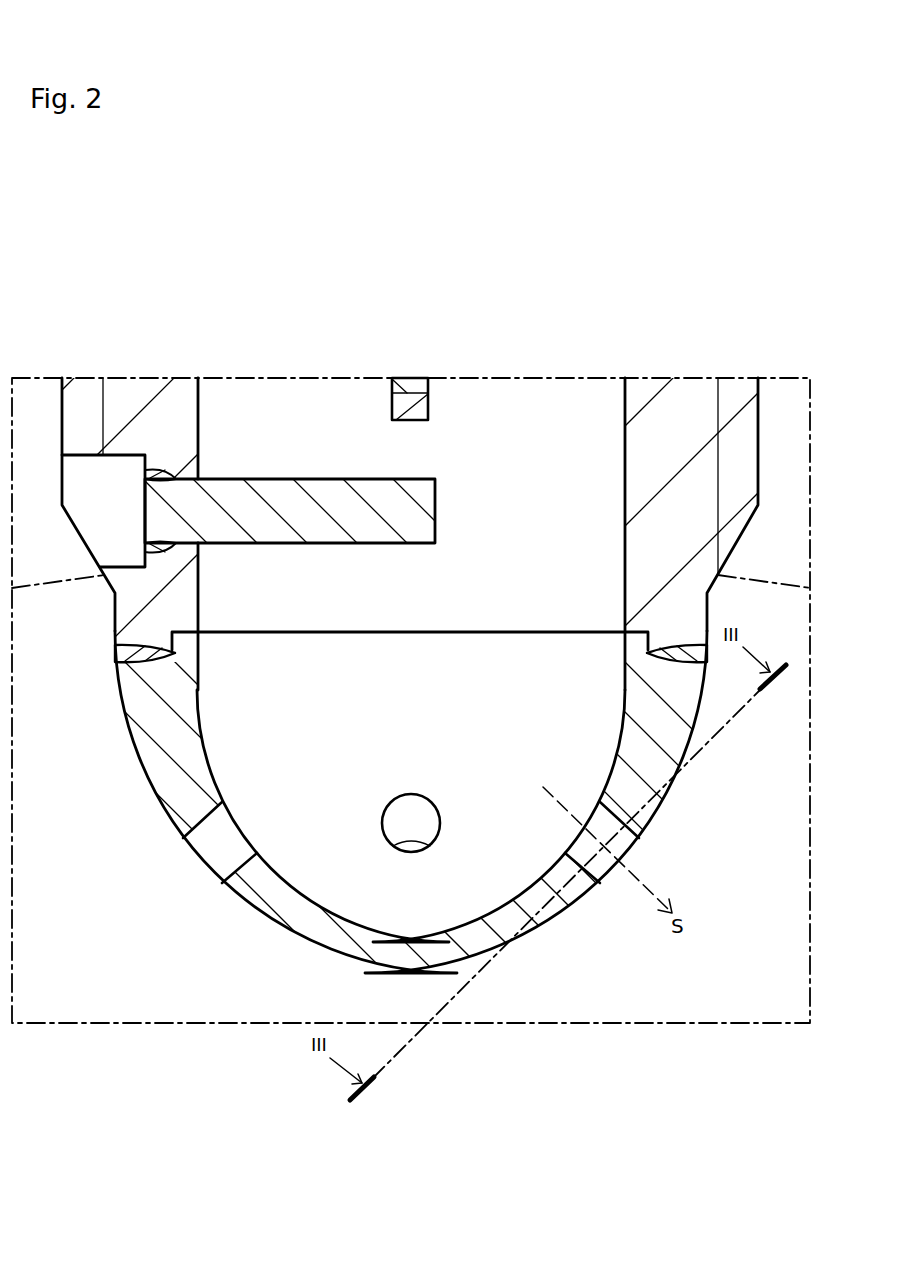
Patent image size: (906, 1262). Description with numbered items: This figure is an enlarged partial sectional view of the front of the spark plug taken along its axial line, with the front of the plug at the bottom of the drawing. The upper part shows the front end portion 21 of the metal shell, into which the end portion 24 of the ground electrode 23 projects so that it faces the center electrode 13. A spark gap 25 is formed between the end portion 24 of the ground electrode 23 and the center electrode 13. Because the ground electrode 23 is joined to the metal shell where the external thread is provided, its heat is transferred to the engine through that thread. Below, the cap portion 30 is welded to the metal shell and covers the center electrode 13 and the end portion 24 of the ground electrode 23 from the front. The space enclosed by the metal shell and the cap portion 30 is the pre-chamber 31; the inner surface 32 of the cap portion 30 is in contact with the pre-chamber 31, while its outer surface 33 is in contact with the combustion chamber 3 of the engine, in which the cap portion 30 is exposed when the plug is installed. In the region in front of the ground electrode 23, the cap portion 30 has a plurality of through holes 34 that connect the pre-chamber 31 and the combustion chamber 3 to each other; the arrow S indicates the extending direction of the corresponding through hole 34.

The front end portion 21 is at (125, 392).
The center electrode 13 is at (423, 385).
The spark gap 25 is at (410, 449).
The end portion 24 is at (422, 532).
The ground electrode 23 is at (323, 528).
The pre-chamber 31 is at (481, 713).
The cap portion 30 is at (453, 649).
The inner surface 32 is at (210, 758).
The outer surface 33 is at (143, 775).
The through holes 34 is at (201, 842).
The combustion chamber 3 is at (561, 971).